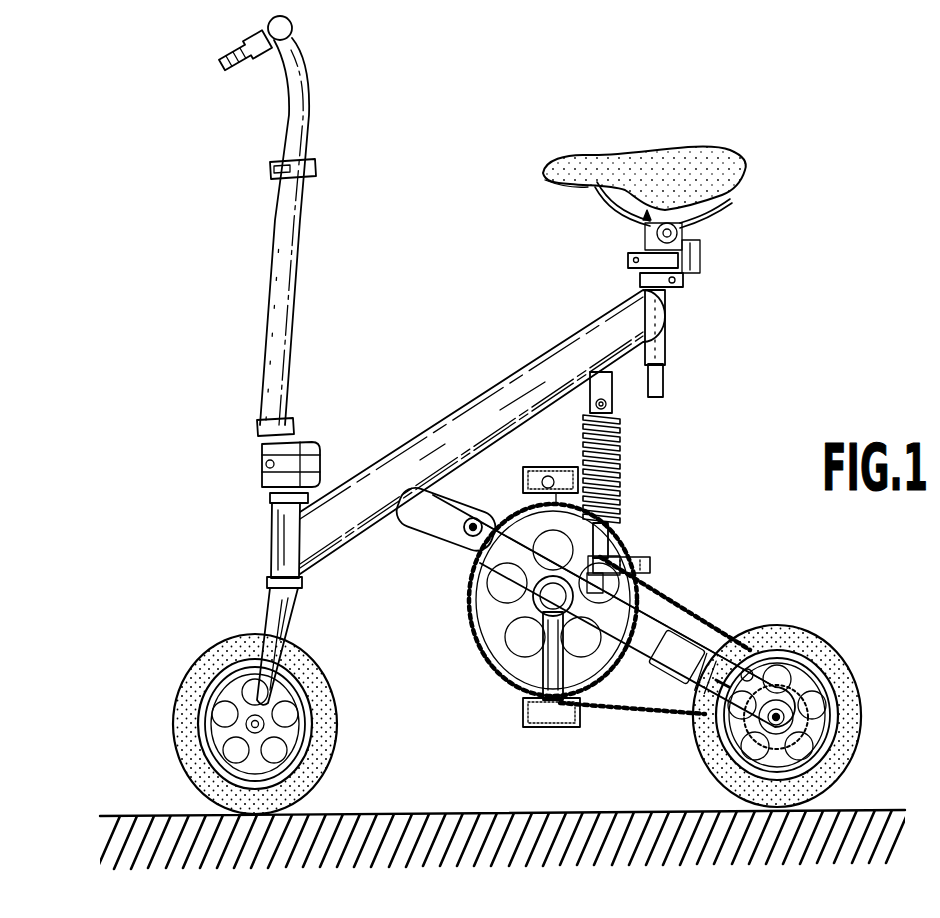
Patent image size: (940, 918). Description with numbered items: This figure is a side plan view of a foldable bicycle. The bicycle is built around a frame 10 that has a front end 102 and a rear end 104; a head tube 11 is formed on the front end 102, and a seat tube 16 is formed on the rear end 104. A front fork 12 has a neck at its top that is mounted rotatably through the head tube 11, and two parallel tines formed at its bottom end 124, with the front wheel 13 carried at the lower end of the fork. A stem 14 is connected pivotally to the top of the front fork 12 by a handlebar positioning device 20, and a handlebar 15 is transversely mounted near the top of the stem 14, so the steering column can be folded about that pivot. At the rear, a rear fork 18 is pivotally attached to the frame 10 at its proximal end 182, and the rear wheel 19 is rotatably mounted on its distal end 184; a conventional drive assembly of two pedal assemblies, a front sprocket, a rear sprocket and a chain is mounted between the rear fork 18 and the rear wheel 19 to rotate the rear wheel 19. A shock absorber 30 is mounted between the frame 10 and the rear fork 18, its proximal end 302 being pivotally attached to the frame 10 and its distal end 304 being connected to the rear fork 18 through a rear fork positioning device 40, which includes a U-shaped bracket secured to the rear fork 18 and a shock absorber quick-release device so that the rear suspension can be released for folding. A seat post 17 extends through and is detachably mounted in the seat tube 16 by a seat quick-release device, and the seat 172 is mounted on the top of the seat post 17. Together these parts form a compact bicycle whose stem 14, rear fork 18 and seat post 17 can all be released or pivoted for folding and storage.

The frame 10 is at (478, 368).
The head tube 11 is at (294, 573).
The front fork 12 is at (252, 606).
The front wheel 13 is at (269, 724).
The stem 14 is at (274, 300).
The handlebar 15 is at (293, 38).
The seat tube 16 is at (691, 349).
The seat post 17 is at (665, 372).
The rear fork 18 is at (587, 605).
The rear wheel 19 is at (757, 702).
The handlebar positioning device 20 is at (316, 422).
The shock absorber 30 is at (645, 473).
The rear fork positioning device 40 is at (640, 560).
The front end 102 is at (312, 600).
The rear end 104 is at (622, 301).
The bottom end 124 is at (272, 742).
The seat 172 is at (675, 217).
The proximal end 182 is at (458, 548).
The distal end 184 is at (707, 747).
The proximal end 302 is at (620, 404).
The distal end 304 is at (625, 550).